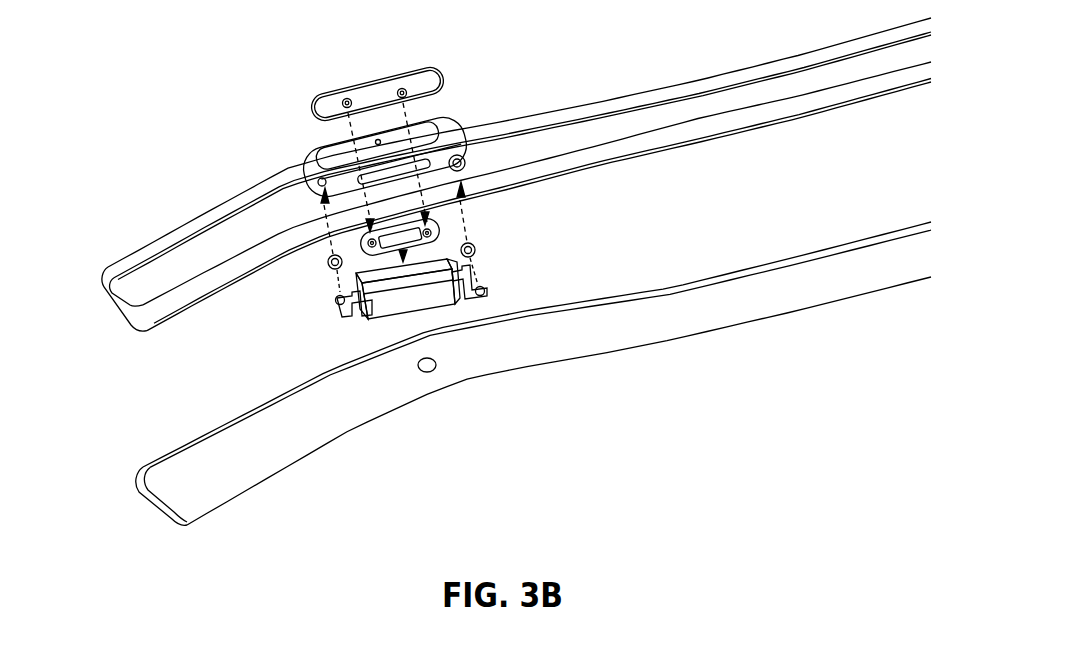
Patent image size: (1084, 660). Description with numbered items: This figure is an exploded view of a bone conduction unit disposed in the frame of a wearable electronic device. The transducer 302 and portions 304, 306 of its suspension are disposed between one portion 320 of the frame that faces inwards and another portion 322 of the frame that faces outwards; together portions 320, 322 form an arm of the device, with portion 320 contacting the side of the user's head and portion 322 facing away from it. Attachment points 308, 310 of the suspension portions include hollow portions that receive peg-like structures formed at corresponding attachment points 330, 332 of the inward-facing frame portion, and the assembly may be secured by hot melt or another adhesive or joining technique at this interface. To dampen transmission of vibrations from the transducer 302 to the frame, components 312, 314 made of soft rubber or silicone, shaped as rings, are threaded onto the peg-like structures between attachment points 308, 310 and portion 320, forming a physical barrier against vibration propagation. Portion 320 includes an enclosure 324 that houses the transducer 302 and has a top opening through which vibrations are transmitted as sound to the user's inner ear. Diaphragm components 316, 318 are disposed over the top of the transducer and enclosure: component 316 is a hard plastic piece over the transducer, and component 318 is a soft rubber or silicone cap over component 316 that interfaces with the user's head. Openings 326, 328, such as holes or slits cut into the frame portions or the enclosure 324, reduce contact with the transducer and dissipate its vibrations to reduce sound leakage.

The transducer 302 is at (388, 303).
The portion of the suspension 304 is at (362, 303).
The portion of the suspension 306 is at (460, 297).
The attachment point 308 is at (340, 300).
The attachment point 310 is at (480, 291).
The component made of a soft material 312 is at (335, 262).
The component made of a soft material 314 is at (480, 248).
The component of a diaphragm 316 is at (423, 237).
The component of a diaphragm 318 is at (332, 103).
The portion of the frame 320 is at (188, 255).
The portion of the frame 322 is at (197, 488).
The enclosure 324 is at (433, 128).
The opening 326 is at (428, 372).
The opening 328 is at (378, 142).
The attachment point 330 is at (322, 182).
The attachment point 332 is at (462, 170).